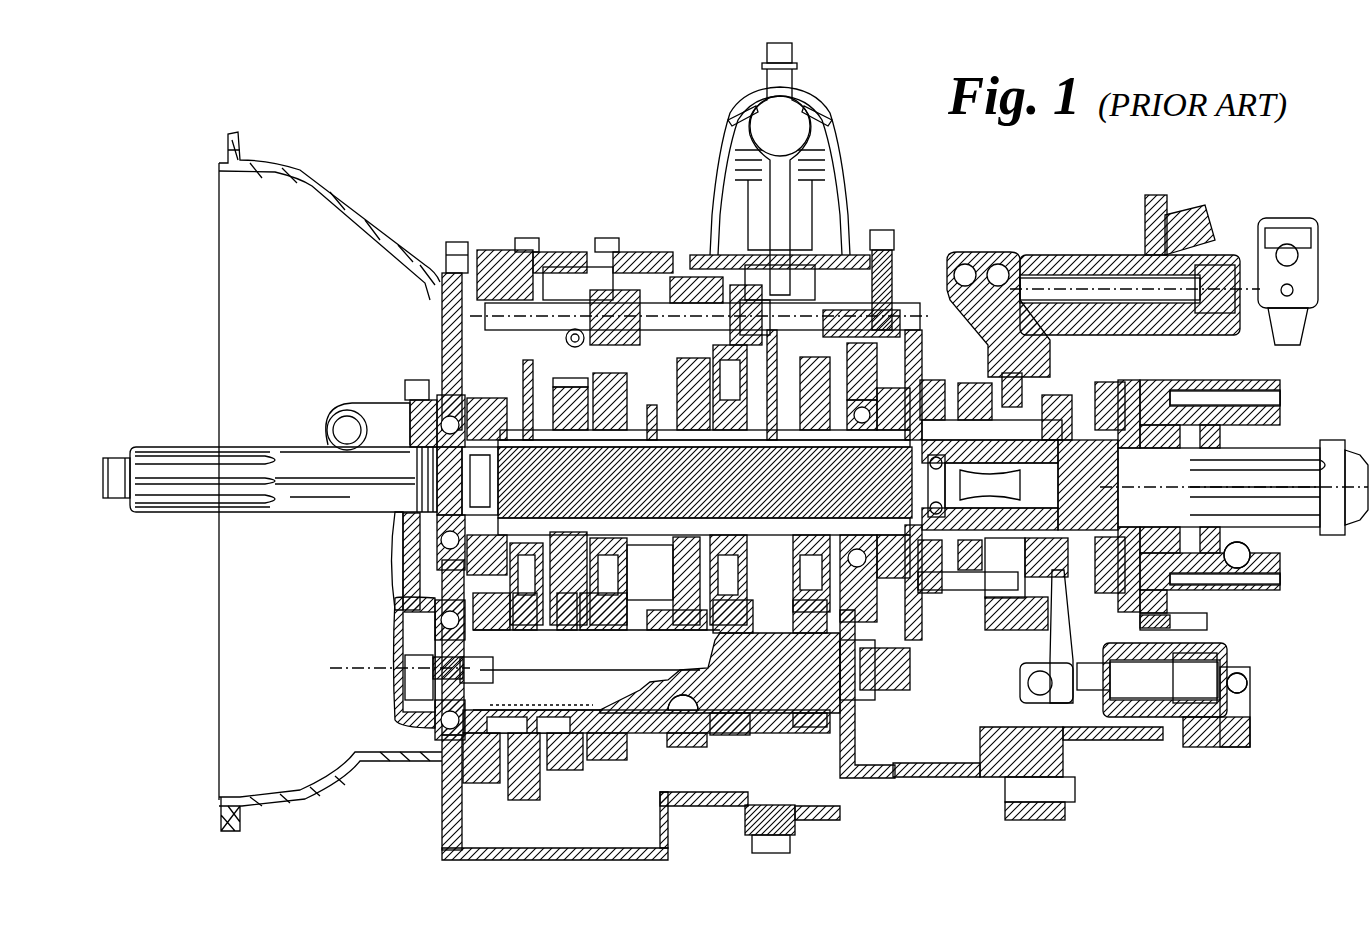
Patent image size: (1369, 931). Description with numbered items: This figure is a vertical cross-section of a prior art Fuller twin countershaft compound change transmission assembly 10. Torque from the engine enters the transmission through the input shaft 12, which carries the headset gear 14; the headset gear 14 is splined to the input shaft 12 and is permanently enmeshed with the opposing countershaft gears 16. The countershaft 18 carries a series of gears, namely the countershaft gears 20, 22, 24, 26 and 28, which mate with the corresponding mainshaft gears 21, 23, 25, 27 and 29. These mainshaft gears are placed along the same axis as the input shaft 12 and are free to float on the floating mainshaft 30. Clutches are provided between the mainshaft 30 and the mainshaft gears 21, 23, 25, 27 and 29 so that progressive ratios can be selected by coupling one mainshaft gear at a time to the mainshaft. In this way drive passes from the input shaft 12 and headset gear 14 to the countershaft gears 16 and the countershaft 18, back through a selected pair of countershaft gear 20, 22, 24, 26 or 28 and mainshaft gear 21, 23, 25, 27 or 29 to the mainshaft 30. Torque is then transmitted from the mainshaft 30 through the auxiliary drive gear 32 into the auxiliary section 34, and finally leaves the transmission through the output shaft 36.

The twin countershaft compound change transmission assembly 10 is at (215, 112).
The input shaft 12 is at (172, 510).
The headset gear 14 is at (490, 400).
The countershaft gears 16 is at (442, 762).
The countershaft 18 is at (435, 688).
The countershaft gear 20 is at (560, 745).
The mainshaft gear 21 is at (500, 395).
The countershaft gear 22 is at (598, 745).
The mainshaft gear 23 is at (545, 398).
The countershaft gear 24 is at (685, 742).
The mainshaft gear 25 is at (612, 392).
The countershaft gear 26 is at (745, 730).
The mainshaft gear 27 is at (655, 392).
The countershaft gear 28 is at (810, 722).
The mainshaft gear 29 is at (685, 392).
The floating mainshaft 30 is at (575, 460).
The auxiliary drive gear 32 is at (898, 405).
The auxiliary section 34 is at (1140, 200).
The output shaft 36 is at (1290, 465).